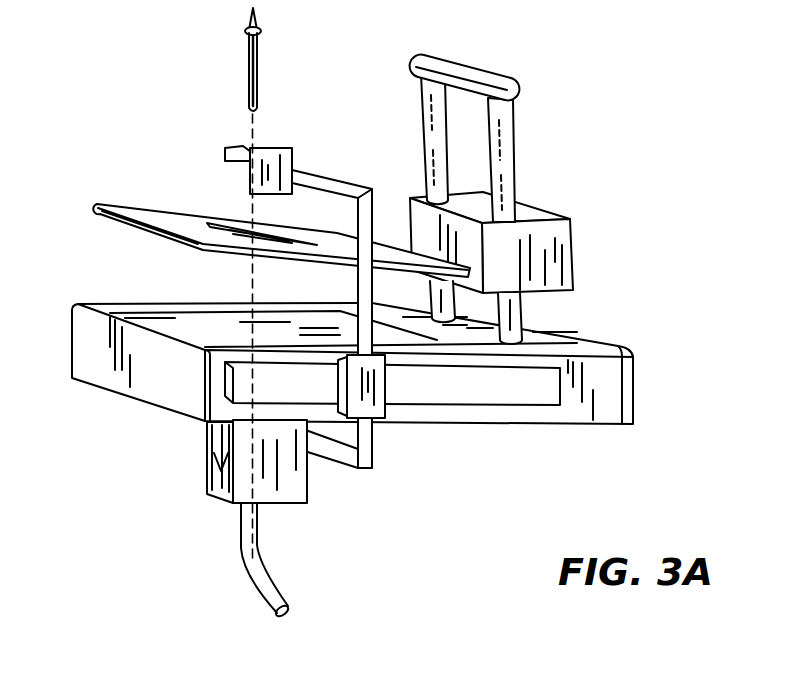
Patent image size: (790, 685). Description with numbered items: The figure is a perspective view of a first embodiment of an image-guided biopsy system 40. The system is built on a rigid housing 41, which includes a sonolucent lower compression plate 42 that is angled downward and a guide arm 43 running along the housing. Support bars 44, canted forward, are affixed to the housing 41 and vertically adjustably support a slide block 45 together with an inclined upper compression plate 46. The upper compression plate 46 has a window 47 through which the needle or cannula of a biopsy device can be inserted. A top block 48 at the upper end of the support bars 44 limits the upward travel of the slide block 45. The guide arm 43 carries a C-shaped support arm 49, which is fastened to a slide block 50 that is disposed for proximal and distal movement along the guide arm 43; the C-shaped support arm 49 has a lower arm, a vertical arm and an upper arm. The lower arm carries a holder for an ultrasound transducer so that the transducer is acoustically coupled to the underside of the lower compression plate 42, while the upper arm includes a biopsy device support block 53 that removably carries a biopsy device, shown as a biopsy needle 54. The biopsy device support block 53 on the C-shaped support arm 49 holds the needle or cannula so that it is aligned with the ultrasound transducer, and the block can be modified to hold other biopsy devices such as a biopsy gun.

The image-guided biopsy system 40 is at (608, 172).
The rigid housing 41 is at (158, 392).
The lower compression plate 42 is at (203, 306).
The guide arm 43 is at (503, 392).
The support bars 44 is at (503, 152).
The slide block 45 is at (575, 255).
The upper compression plate 46 is at (140, 206).
The window 47 is at (230, 222).
The top block 48 is at (480, 74).
The C-shaped support arm 49 is at (372, 454).
The slide block 50 is at (380, 398).
The biopsy device support block 53 is at (292, 150).
The biopsy needle 54 is at (260, 43).